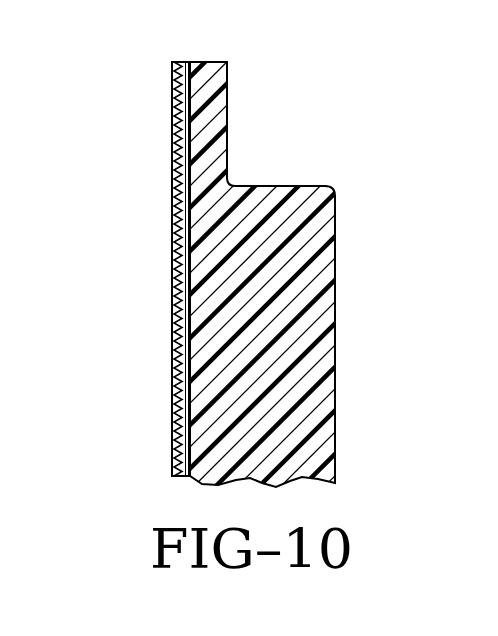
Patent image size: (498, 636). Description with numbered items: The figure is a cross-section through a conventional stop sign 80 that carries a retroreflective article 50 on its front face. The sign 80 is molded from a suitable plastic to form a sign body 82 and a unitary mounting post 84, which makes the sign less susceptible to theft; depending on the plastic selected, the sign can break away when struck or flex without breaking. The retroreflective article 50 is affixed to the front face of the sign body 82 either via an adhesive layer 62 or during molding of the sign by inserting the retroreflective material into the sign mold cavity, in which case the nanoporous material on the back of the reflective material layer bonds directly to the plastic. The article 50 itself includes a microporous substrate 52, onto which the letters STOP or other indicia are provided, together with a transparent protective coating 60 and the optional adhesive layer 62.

The retroreflective article 50 is at (162, 70).
The microporous substrate 52 is at (183, 62).
The transparent protective coating 60 is at (172, 148).
The adhesive layer 62 is at (205, 98).
The stop sign 80 is at (340, 161).
The sign body 82 is at (220, 132).
The mounting post 84 is at (320, 352).